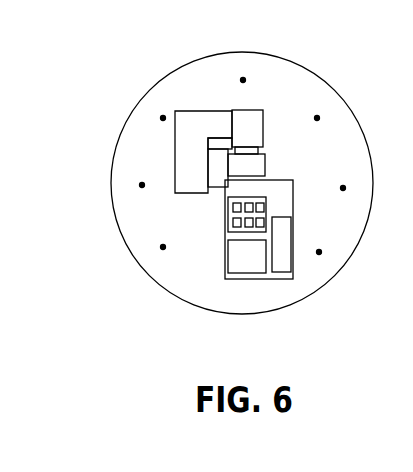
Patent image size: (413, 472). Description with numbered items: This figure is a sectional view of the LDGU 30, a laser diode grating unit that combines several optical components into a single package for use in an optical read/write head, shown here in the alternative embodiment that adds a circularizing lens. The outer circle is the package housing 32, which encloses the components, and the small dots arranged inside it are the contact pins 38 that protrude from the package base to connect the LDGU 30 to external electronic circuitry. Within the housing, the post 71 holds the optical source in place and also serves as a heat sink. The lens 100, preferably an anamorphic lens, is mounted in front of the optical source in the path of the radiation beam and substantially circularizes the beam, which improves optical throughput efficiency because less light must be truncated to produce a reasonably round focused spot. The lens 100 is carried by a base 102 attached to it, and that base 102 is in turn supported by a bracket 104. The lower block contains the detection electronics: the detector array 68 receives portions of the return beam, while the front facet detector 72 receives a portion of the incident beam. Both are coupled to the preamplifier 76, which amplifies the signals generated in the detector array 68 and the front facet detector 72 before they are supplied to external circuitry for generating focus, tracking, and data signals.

The LDGU 30 is at (110, 85).
The package housing 32 is at (190, 63).
The contact pins 38 is at (243, 80).
The detector array 68 is at (228, 227).
The post 71 is at (264, 113).
The front facet detector 72 is at (228, 263).
The preamplifier 76 is at (293, 237).
The lens 100 is at (266, 157).
The base 102 is at (215, 138).
The bracket 104 is at (175, 184).